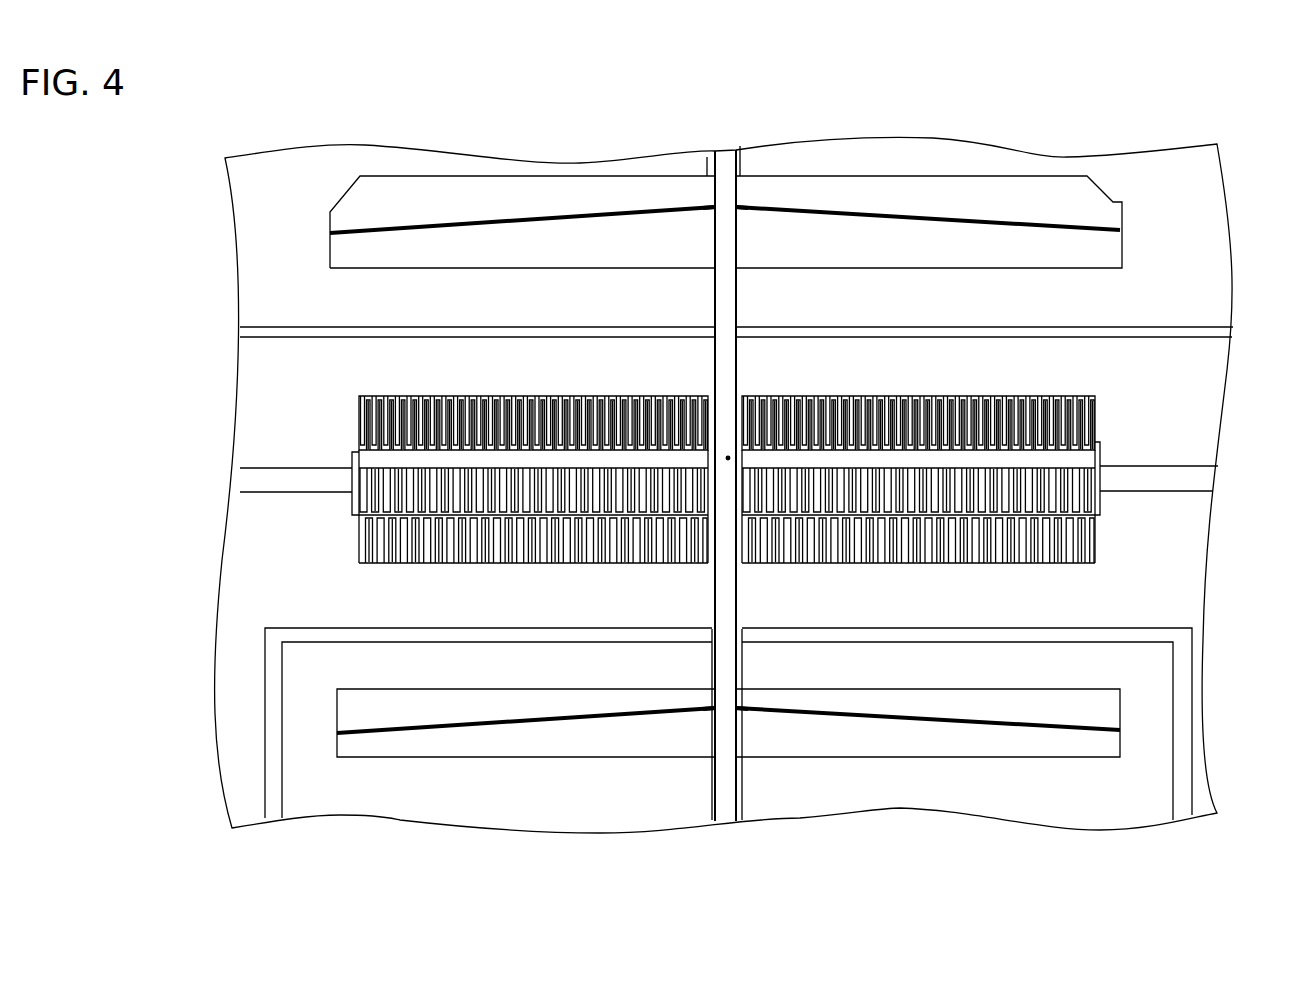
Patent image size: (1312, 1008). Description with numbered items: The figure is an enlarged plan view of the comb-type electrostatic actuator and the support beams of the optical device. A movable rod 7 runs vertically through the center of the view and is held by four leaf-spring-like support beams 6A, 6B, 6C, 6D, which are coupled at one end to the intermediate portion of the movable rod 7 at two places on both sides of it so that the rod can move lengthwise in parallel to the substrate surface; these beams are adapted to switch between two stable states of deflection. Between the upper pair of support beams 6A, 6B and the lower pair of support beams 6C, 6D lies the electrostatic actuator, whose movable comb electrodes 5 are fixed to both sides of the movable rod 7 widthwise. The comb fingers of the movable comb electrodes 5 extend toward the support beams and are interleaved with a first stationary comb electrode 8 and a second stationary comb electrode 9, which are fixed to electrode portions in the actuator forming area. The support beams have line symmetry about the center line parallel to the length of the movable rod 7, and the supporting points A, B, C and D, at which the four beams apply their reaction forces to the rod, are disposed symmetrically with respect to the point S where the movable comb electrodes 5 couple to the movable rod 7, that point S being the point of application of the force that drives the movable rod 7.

The movable comb electrodes 5 is at (1098, 453).
The support beam 6A is at (451, 223).
The support beam 6B is at (1045, 225).
The support beam 6C is at (537, 718).
The support beam 6D is at (1045, 724).
The movable rod 7 is at (726, 165).
The first stationary comb electrode 8 is at (1088, 537).
The second stationary comb electrode 9 is at (1090, 397).
The supporting point A is at (715, 206).
The supporting point B is at (736, 207).
The supporting point C is at (716, 707).
The supporting point D is at (736, 707).
The point of application of the driving force S is at (728, 458).